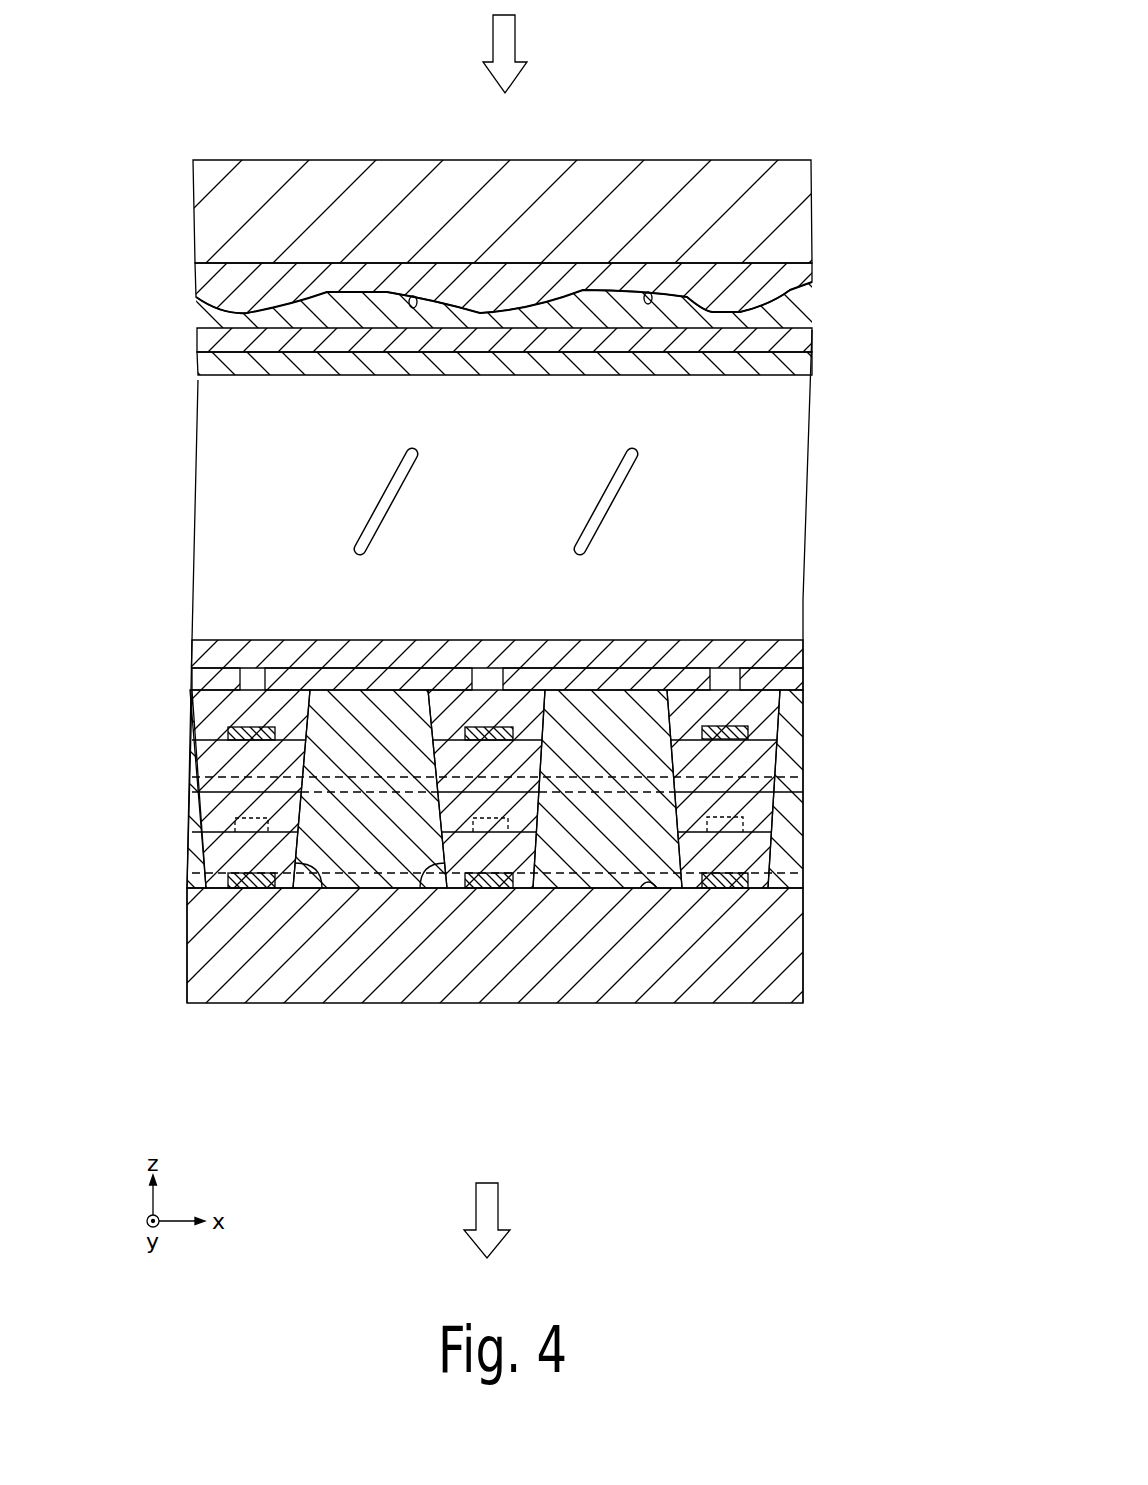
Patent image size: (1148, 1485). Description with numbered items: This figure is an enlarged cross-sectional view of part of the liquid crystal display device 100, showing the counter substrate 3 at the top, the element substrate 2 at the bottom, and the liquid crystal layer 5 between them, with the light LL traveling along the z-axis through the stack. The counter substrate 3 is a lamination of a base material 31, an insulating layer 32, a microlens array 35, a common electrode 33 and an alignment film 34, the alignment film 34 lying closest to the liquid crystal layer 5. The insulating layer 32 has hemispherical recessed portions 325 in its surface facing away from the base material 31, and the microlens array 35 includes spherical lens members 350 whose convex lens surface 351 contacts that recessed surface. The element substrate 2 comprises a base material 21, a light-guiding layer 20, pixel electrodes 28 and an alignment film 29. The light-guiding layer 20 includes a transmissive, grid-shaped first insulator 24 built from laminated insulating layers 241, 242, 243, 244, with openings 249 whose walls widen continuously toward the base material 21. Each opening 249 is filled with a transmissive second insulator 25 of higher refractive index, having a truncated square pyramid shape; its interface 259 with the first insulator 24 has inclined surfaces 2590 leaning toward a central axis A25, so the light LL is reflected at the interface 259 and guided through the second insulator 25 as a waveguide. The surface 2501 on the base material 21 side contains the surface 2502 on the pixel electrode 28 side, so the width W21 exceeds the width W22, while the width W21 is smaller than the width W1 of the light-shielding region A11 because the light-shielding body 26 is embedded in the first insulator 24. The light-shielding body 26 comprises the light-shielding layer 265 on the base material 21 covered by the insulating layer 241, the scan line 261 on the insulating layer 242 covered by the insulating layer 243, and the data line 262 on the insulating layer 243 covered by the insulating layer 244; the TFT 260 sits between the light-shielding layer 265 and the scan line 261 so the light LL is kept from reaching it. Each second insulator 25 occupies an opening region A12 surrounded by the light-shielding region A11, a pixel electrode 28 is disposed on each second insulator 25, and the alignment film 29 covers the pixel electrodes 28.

The liquid crystal display device 100 is at (502, 586).
The counter substrate 3 is at (537, 241).
The base material 31 is at (788, 237).
The insulating layer 32 is at (788, 270).
The microlens array 35 is at (788, 305).
The common electrode 33 is at (788, 338).
The alignment film 34 is at (788, 367).
The recessed portion 325 is at (413, 296).
The lens member 350 is at (315, 305).
The convex lens surface 351 is at (365, 290).
The liquid crystal layer 5 is at (818, 524).
The element substrate 2 is at (502, 832).
The alignment film 29 is at (790, 652).
The pixel electrode 28 is at (292, 673).
The surface 2502 is at (650, 684).
The light-guiding layer 20 is at (502, 885).
The second insulator 25 is at (380, 717).
The opening 249 is at (658, 730).
The first insulator 24 is at (558, 810).
The insulating layer 244 is at (772, 742).
The insulating layer 243 is at (775, 790).
The insulating layer 242 is at (772, 822).
The insulating layer 241 is at (533, 865).
The light-shielding body 26 is at (414, 807).
The data line 262 is at (190, 777).
The scan line 261 is at (233, 820).
The light-shielding layer 265 is at (228, 876).
The TFT 260 is at (268, 832).
The interface 259 is at (376, 979).
The inclined surface 2590 is at (323, 888).
The surface 2501 is at (652, 890).
The base material 21 is at (788, 942).
The light-shielding region A11 is at (229, 888).
The opening region A12 is at (465, 888).
The width of the light-shielding region W1 is at (515, 1010).
The width of the surface on the base material side W21 is at (532, 1010).
The width of the surface on the pixel electrode side W22 is at (547, 1010).
The central axis A25 is at (615, 1230).
The light LL is at (517, 40).